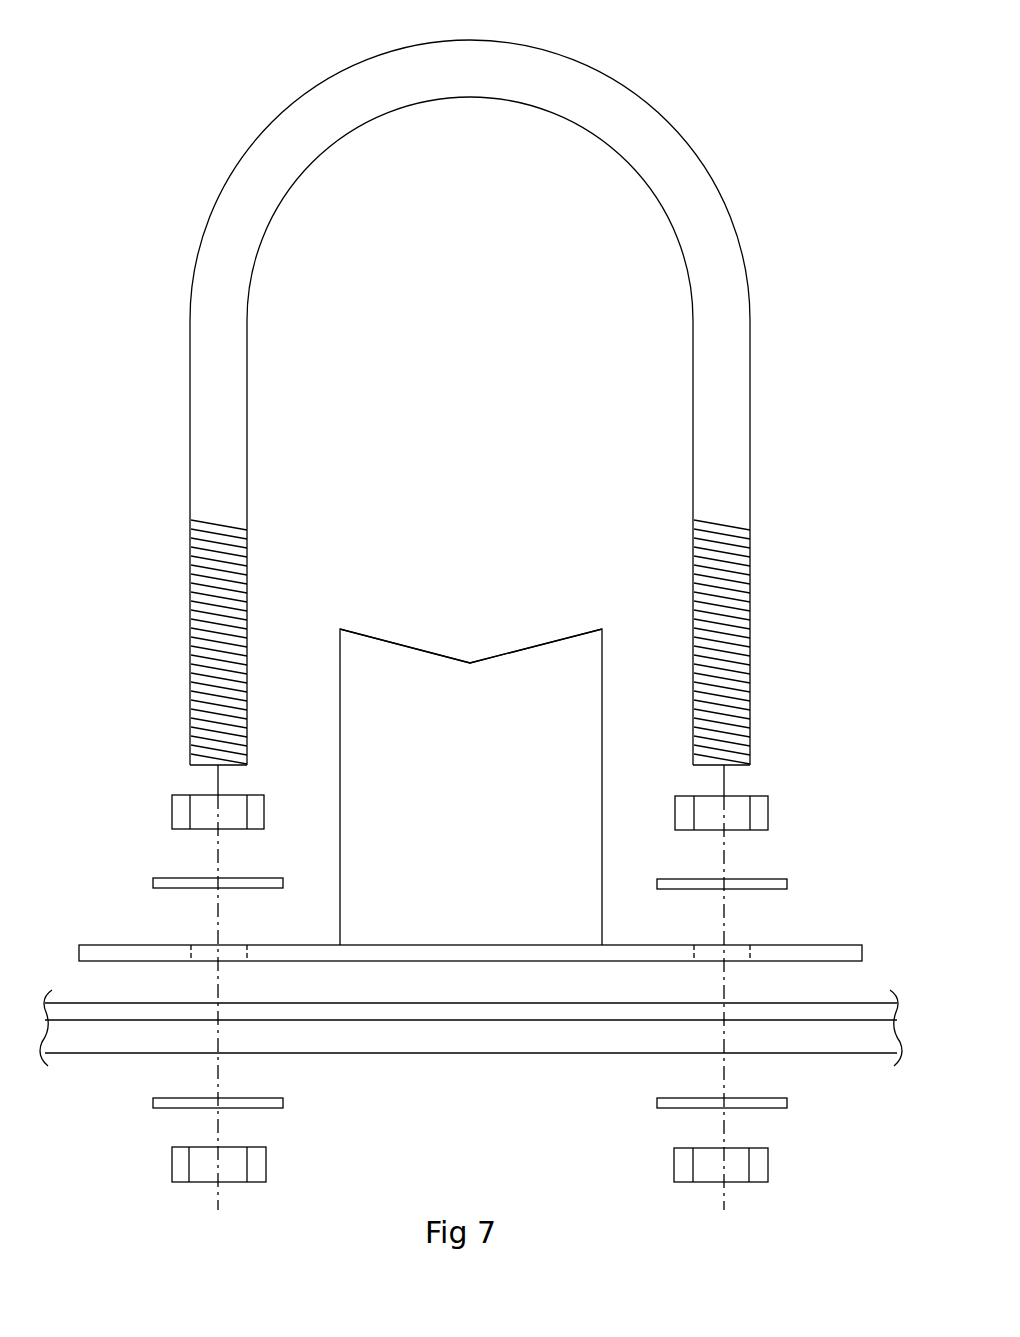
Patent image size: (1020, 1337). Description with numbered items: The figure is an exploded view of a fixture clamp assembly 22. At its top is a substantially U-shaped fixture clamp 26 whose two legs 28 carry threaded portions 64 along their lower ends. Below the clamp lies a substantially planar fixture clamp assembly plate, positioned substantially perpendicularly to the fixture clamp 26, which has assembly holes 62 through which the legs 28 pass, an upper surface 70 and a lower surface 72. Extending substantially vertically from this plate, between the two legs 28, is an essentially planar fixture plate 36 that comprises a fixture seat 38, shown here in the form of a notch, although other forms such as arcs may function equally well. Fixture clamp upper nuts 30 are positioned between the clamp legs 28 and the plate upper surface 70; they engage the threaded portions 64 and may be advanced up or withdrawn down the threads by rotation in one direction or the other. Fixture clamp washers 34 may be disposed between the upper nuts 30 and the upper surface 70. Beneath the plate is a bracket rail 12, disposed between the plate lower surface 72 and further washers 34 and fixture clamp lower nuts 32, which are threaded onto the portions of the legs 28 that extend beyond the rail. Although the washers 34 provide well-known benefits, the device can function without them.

The bracket rail 12 is at (435, 1043).
The fixture clamp assembly 22 is at (330, 74).
The fixture clamp 26 is at (618, 76).
The legs 28 is at (248, 380).
The fixture clamp upper nuts 30 is at (265, 813).
The fixture clamp lower nuts 32 is at (172, 1167).
The fixture clamp washers 34 is at (258, 878).
The fixture plate 36 is at (356, 740).
The fixture seat 38 is at (447, 658).
The assembly holes 62 is at (235, 948).
The threaded portions 64 is at (190, 657).
The upper surface 70 is at (492, 943).
The lower surface 72 is at (596, 962).